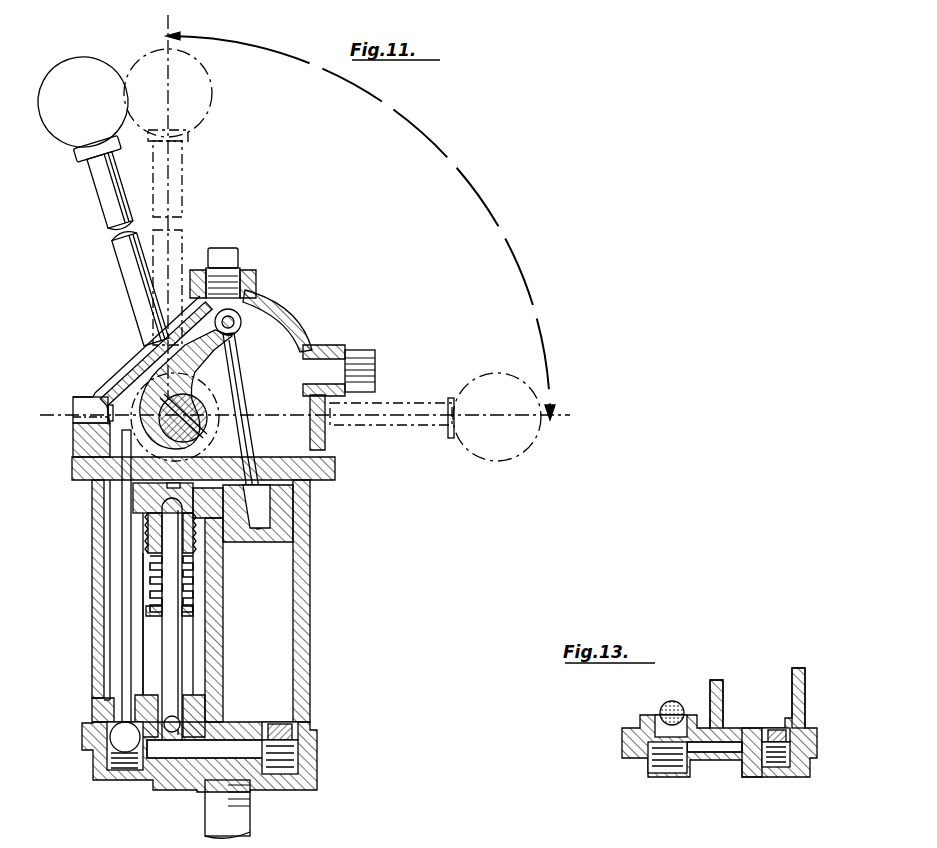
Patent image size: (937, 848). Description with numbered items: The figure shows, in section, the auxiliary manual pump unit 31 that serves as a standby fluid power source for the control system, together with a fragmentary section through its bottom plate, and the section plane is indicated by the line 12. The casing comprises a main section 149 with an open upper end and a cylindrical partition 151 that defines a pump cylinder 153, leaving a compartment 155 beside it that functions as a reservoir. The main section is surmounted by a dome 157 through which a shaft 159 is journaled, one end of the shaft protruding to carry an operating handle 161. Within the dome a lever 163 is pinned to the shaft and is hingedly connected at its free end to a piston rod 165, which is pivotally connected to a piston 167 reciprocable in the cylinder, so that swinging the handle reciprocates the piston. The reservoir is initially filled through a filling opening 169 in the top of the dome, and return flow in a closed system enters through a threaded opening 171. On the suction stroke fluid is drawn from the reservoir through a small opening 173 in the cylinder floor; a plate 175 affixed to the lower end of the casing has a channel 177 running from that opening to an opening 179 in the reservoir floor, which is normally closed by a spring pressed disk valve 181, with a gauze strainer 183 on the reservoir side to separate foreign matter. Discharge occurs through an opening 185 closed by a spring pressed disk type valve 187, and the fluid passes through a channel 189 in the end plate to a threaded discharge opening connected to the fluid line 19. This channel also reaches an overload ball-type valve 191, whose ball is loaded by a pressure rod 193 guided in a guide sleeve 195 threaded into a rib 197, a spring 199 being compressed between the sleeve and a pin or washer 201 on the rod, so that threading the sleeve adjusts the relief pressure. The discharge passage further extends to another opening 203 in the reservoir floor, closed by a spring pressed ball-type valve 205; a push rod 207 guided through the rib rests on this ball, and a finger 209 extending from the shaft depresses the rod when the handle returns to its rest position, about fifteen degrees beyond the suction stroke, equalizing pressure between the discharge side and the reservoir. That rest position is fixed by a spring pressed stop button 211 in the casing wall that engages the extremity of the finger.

In FIG. 11, the section line 12- 12 is at (50, 412).
In FIG. 11, the fluid line 19 is at (250, 812).
In FIG. 11, the manual pump unit 31 is at (84, 570).
In FIG. 11, the main section 149 is at (94, 630).
In FIG. 13, the main section 149 is at (806, 680).
In FIG. 11, the cylindrical partition 151 is at (212, 645).
In FIG. 13, the cylindrical partition 151 is at (722, 690).
In FIG. 11, the pump cylinder 153 is at (300, 668).
In FIG. 11, the compartment 155 is at (130, 652).
In FIG. 11, the dome 157 is at (290, 320).
In FIG. 11, the shaft 159 is at (164, 403).
In FIG. 11, the operating handle 161 is at (122, 252).
In FIG. 11, the lever 163 is at (196, 388).
In FIG. 11, the piston rod 165 is at (240, 382).
In FIG. 11, the piston 167 is at (262, 540).
In FIG. 11, the filling opening 169 is at (228, 278).
In FIG. 11, the threaded opening 171 is at (350, 358).
In FIG. 13, the small opening 173 is at (742, 730).
In FIG. 11, the plate 175 is at (180, 770).
In FIG. 13, the plate 175 is at (760, 773).
In FIG. 13, the channel 177 is at (712, 757).
In FIG. 13, the opening 179 is at (668, 735).
In FIG. 13, the disk valve 181 is at (655, 760).
In FIG. 13, the gauze strainer 183 is at (678, 718).
In FIG. 11, the opening 185 is at (298, 722).
In FIG. 13, the opening 185 is at (800, 725).
In FIG. 11, the disk type valve 187 is at (296, 764).
In FIG. 13, the disk type valve 187 is at (785, 765).
In FIG. 11, the channel 189 is at (240, 738).
In FIG. 11, the overload ball-type valve 191 is at (180, 706).
In FIG. 11, the pressure rod 193 is at (165, 655).
In FIG. 11, the guide sleeve 195 is at (192, 498).
In FIG. 11, the rib 197 is at (163, 483).
In FIG. 11, the spring 199 is at (152, 618).
In FIG. 11, the pin or washer 201 is at (196, 610).
In FIG. 11, the opening 203 is at (110, 710).
In FIG. 11, the ball-type valve 205 is at (108, 752).
In FIG. 11, the push rod 207 is at (122, 578).
In FIG. 11, the finger 209 is at (88, 452).
In FIG. 11, the stop button 211 is at (85, 424).